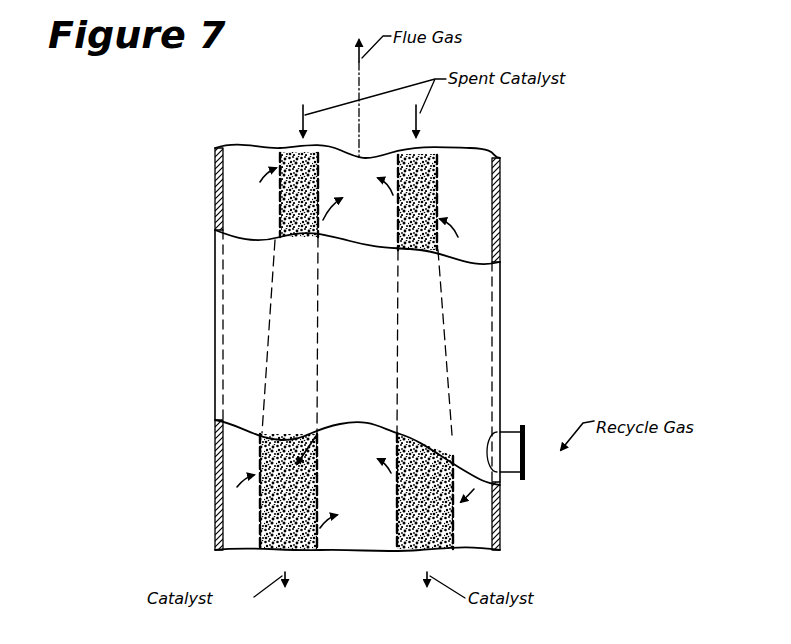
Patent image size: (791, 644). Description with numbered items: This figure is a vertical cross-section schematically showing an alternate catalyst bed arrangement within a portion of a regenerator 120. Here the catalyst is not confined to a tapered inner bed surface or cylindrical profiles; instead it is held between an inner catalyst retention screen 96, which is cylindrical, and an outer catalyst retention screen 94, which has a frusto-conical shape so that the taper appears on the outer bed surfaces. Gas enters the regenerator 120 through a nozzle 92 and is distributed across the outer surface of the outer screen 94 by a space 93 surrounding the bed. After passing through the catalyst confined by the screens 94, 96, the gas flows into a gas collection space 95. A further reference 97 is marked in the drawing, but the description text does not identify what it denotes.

The regenerator 120 is at (213, 192).
The space 93 is at (478, 185).
The outer catalyst retention screen 94 is at (272, 312).
The gas collection space 95 is at (366, 497).
The inner catalyst retention screen 96 is at (397, 183).
The bed surface 97 is at (398, 433).
The nozzle 92 is at (522, 425).